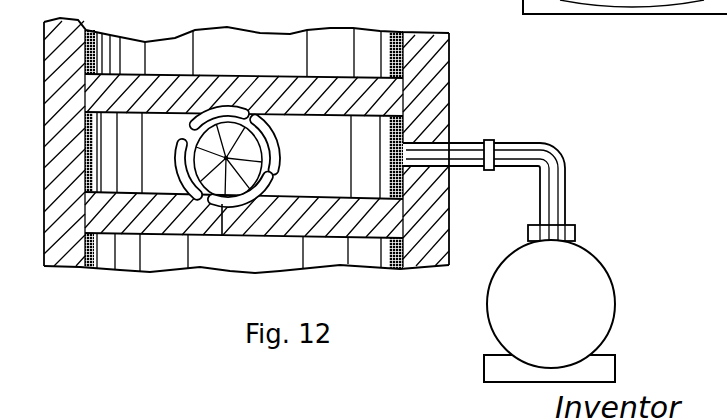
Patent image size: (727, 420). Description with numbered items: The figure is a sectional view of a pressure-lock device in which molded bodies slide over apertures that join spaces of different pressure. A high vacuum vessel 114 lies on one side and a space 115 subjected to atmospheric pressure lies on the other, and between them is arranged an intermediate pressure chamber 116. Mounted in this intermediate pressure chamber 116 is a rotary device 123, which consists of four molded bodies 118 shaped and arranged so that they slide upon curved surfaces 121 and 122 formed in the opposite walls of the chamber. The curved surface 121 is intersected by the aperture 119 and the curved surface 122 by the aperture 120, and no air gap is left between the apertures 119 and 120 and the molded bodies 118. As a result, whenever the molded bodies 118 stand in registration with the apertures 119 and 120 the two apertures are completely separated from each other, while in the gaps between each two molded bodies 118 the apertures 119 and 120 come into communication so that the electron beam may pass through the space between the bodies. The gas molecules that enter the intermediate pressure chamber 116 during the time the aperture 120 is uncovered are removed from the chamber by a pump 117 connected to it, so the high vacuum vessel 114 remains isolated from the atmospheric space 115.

The high vacuum vessel 114 is at (323, 38).
The space subjected to atmospheric pressure 115 is at (200, 258).
The intermediate pressure chamber 116 is at (110, 143).
The pump 117 is at (497, 294).
The molded bodies 118 is at (282, 148).
The aperture 119 is at (226, 108).
The aperture 120 is at (222, 236).
The curved surface 121 is at (256, 105).
The curved surface 122 is at (250, 200).
The rotary device 123 is at (250, 162).